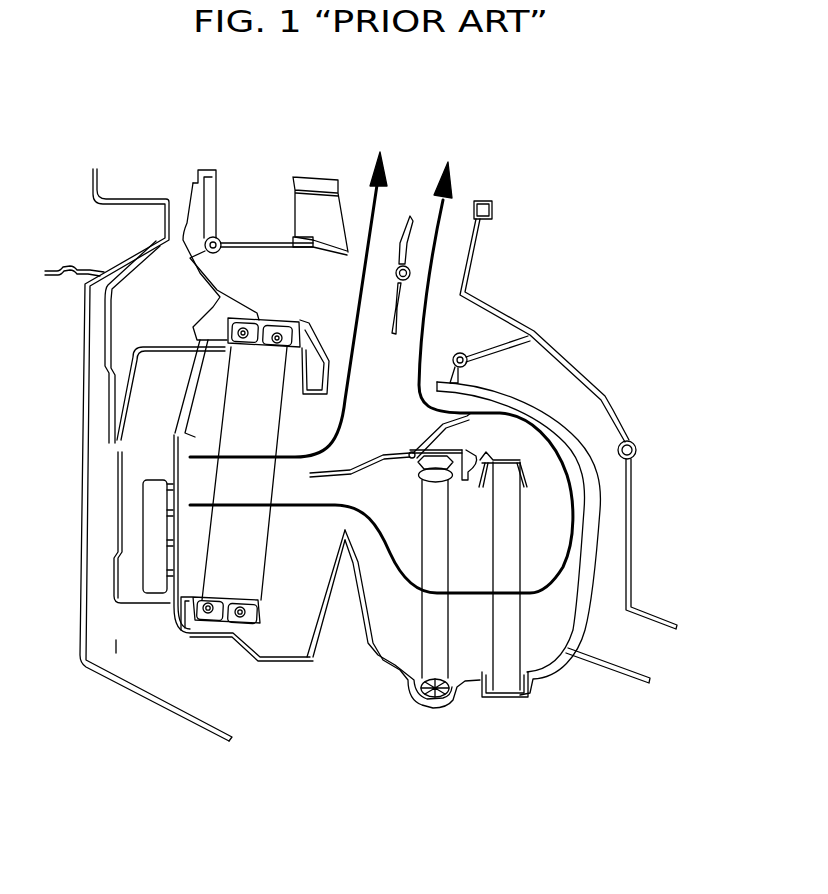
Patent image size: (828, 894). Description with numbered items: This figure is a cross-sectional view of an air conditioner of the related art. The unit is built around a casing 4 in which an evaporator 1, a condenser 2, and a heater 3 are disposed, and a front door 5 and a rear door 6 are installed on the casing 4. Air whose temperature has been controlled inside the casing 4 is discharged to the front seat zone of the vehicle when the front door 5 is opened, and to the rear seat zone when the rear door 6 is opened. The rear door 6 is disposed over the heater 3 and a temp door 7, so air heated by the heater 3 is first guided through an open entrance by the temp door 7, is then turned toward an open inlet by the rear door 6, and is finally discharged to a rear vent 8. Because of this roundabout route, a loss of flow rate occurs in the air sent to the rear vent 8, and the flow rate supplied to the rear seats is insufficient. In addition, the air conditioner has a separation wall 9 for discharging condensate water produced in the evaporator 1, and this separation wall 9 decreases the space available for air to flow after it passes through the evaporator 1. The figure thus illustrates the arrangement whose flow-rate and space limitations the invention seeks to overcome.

The evaporator 1 is at (217, 572).
The condenser 2 is at (433, 667).
The heater 3 is at (508, 670).
The casing 4 is at (558, 353).
The front door 5 is at (413, 217).
The rear door 6 is at (490, 352).
The temp door 7 is at (433, 408).
The rear vent 8 is at (650, 620).
The separation wall 9 is at (331, 568).